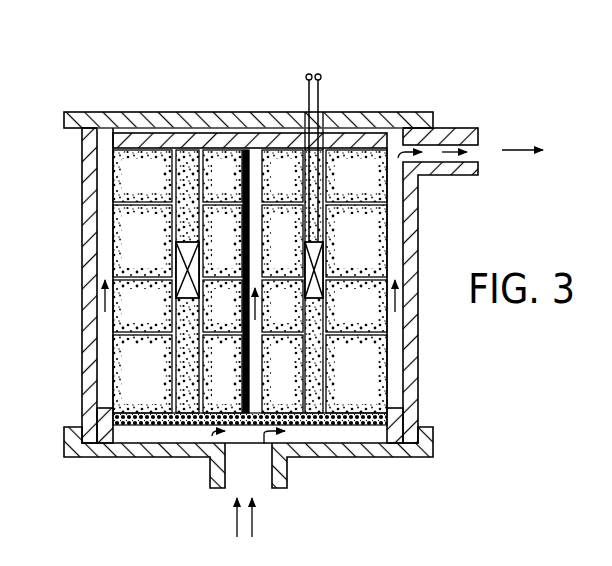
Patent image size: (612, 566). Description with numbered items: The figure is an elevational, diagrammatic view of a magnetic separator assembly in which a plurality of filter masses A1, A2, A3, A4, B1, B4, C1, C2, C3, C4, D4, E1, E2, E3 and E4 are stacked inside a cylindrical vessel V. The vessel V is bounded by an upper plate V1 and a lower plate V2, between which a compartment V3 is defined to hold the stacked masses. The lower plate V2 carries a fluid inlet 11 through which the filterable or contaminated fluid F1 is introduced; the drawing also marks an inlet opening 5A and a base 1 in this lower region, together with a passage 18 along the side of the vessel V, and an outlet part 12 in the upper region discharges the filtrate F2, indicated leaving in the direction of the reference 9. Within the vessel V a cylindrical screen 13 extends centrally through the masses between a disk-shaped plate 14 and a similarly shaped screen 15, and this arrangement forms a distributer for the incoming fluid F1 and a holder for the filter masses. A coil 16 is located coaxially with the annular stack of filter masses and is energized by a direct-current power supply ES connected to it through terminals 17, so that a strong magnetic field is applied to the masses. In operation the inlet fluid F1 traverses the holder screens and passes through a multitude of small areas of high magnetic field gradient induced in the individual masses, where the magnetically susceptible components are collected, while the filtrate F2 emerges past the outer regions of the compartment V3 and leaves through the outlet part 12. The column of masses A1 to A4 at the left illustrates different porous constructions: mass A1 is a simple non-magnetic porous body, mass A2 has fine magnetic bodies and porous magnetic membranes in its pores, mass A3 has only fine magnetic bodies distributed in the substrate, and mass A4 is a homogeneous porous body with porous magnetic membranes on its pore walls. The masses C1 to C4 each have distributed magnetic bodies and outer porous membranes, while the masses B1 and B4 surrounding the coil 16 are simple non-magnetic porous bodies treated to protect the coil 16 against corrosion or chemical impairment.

The bottom plate / base of vessel 1 is at (127, 452).
The inlet opening 5A is at (248, 456).
The treated fluid outlet flow 9 is at (555, 152).
The fluid inlet 11 is at (283, 490).
The outlet part 12 is at (457, 132).
The cylindrical screen 13 is at (252, 154).
The disk-shaped plate 14 is at (138, 140).
The screen 15 is at (153, 420).
The coil 16 is at (176, 258).
The terminals 17 is at (320, 98).
The vertical side passages 18 is at (100, 325).
The direct-current power supply ES is at (312, 73).
The filterable or contaminated fluid F1 is at (250, 532).
The filtrate F2 is at (522, 169).
The vessel V is at (82, 203).
The upper plate V1 is at (388, 452).
The lower plate V2 is at (203, 130).
The compartment V3 is at (103, 147).
The filter mass B1 is at (190, 418).
The filter mass B4 is at (188, 162).
The filter mass A1 is at (142, 374).
The filter mass A2 is at (142, 306).
The filter mass A3 is at (142, 241).
The filter mass A4 is at (142, 176).
The filter mass C1 is at (222, 374).
The filter mass C2 is at (222, 306).
The filter mass C3 is at (222, 241).
The filter mass C4 is at (222, 176).
The filter mass D4 is at (282, 176).
The filter mass E1 is at (356, 374).
The filter mass E2 is at (356, 306).
The filter mass E3 is at (356, 241).
The filter mass E4 is at (356, 176).